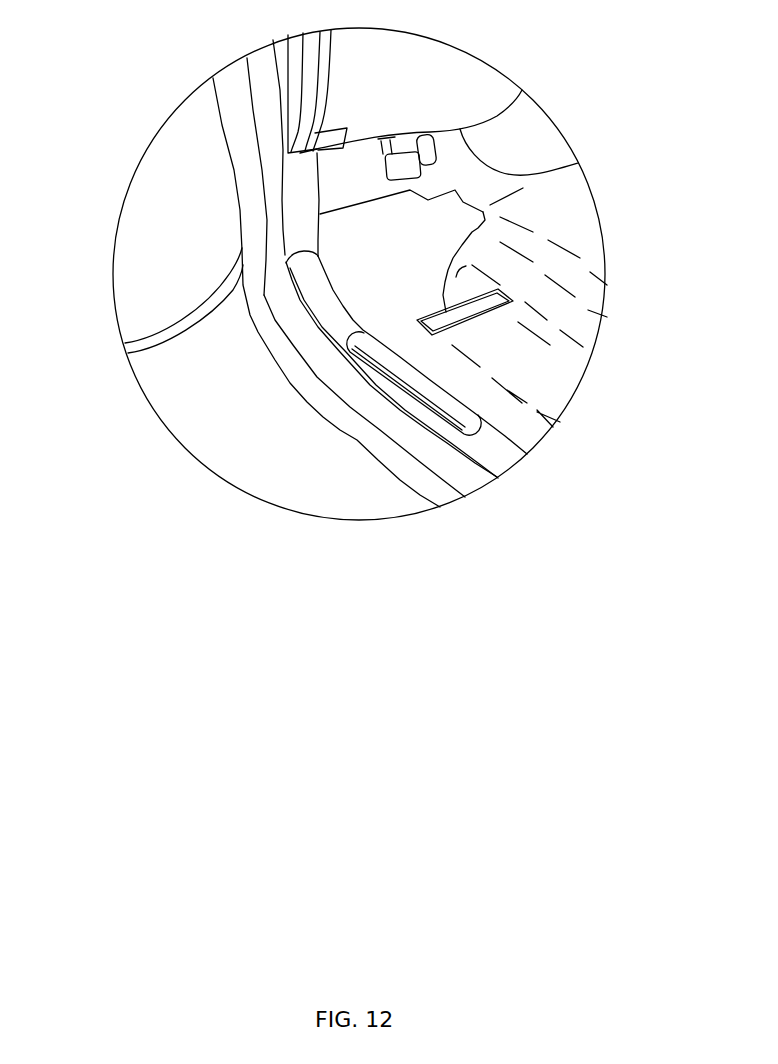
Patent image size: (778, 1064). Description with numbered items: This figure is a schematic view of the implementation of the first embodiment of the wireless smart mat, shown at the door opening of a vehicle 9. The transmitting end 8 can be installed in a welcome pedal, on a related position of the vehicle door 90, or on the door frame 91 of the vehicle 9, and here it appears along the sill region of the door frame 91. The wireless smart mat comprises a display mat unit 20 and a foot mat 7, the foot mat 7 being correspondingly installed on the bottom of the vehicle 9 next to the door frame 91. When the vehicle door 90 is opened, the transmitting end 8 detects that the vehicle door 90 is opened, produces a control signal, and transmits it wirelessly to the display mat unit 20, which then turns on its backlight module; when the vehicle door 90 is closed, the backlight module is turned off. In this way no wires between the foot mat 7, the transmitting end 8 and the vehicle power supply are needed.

The foot mat 7 is at (462, 205).
The transmitting end 8 is at (453, 417).
The vehicle 9 is at (362, 437).
The display mat unit 20 is at (510, 298).
The vehicle door 90 is at (152, 217).
The door frame 91 is at (502, 465).